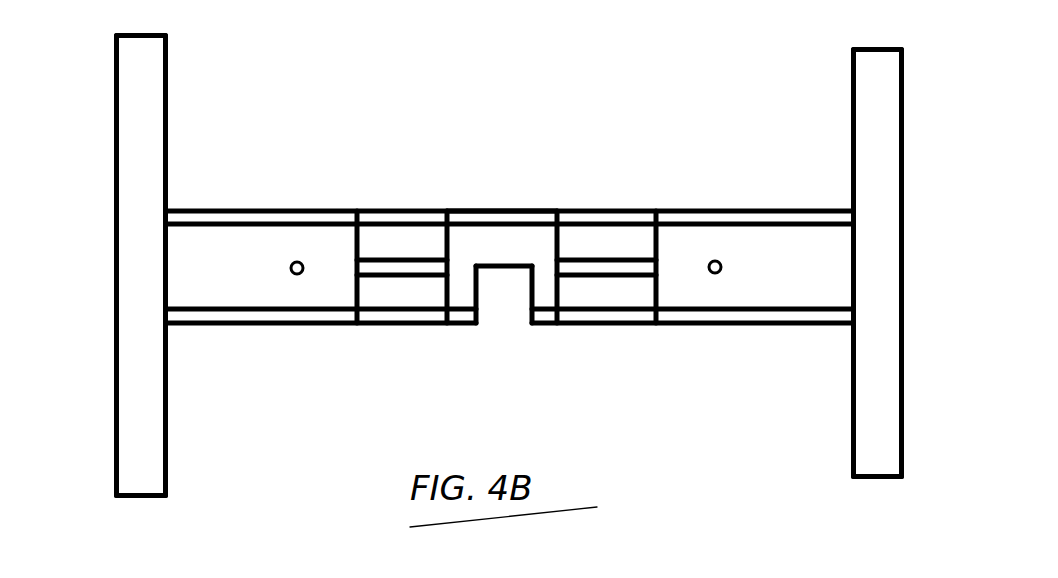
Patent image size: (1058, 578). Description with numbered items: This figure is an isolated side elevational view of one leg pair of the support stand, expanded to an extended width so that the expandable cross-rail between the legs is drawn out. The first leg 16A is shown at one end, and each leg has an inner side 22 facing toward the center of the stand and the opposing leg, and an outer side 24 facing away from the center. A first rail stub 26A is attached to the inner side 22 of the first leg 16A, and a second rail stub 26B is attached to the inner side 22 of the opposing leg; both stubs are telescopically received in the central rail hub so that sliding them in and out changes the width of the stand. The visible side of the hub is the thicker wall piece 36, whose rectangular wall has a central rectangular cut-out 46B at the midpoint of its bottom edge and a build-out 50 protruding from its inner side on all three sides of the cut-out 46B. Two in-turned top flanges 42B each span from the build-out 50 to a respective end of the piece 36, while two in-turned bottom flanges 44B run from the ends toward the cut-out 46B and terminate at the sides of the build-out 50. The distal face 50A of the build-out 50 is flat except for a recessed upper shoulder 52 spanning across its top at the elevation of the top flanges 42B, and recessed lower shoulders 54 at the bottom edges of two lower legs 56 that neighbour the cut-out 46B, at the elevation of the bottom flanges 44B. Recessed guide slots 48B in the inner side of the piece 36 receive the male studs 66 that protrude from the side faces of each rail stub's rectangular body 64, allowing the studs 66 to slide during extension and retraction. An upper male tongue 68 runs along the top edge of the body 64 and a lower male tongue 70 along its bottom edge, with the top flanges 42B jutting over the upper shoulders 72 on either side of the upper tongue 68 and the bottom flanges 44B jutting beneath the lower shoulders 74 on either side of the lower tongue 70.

The first leg 16A is at (140, 153).
The inner side 22 is at (170, 146).
The outer side 24 is at (906, 125).
The first rail stub 26A is at (257, 233).
The second rail stub 26B is at (765, 238).
The thicker wall piece 36 is at (620, 222).
The in-turned top flanges 42B is at (391, 212).
The in-turned bottom flanges 44B is at (404, 318).
The central rectangular cut-out 46B is at (503, 320).
The recessed guide slots 48B is at (396, 270).
The build-out 50 is at (531, 240).
The distal face 50A is at (520, 254).
The recessed upper shoulder 52 is at (486, 212).
The recessed lower shoulders 54 is at (466, 319).
The lower legs 56 is at (456, 288).
The rectangular body 64 is at (232, 264).
The male studs 66 is at (288, 272).
The upper male tongue 68 is at (298, 218).
The lower male tongue 70 is at (283, 318).
The upper shoulders 72 is at (198, 228).
The lower shoulders 74 is at (240, 310).